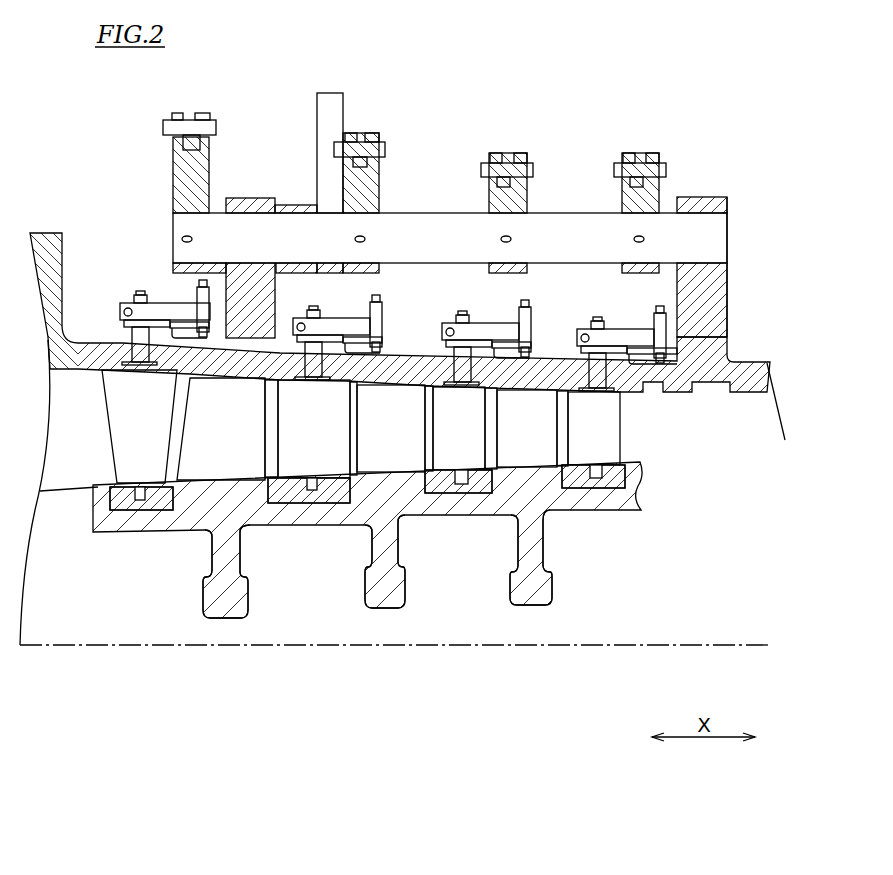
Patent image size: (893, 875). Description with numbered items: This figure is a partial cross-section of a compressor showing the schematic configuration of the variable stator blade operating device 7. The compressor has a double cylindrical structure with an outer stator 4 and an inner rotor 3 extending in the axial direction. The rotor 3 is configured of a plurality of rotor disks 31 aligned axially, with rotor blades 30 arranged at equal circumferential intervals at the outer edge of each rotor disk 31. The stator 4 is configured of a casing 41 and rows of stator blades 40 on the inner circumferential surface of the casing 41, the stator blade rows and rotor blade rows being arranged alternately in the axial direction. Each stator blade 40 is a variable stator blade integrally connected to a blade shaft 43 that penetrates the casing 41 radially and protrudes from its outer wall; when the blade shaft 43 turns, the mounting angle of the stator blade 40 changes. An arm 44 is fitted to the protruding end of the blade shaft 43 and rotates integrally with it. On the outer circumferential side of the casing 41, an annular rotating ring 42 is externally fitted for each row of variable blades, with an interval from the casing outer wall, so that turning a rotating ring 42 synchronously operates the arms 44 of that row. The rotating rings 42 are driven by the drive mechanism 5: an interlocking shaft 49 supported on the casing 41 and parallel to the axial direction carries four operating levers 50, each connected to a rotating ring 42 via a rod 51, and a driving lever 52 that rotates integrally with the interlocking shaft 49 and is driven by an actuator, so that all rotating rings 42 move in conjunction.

The rotor 3 is at (369, 607).
The stator 4 is at (645, 400).
The drive mechanism 5 is at (727, 131).
The operating device 7 is at (84, 140).
The rotor blade 30 is at (250, 470).
The rotor disk 31 is at (381, 612).
The stator blade 40 is at (130, 480).
The casing 41 is at (747, 362).
The rotating ring 42 is at (175, 303).
The blade shaft 43 is at (127, 352).
The arm 44 is at (128, 305).
The interlocking shaft 49 is at (728, 240).
The operating lever 50 is at (209, 180).
The rod 51 is at (355, 133).
The driving lever 52 is at (325, 92).